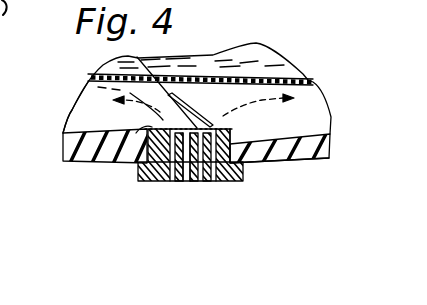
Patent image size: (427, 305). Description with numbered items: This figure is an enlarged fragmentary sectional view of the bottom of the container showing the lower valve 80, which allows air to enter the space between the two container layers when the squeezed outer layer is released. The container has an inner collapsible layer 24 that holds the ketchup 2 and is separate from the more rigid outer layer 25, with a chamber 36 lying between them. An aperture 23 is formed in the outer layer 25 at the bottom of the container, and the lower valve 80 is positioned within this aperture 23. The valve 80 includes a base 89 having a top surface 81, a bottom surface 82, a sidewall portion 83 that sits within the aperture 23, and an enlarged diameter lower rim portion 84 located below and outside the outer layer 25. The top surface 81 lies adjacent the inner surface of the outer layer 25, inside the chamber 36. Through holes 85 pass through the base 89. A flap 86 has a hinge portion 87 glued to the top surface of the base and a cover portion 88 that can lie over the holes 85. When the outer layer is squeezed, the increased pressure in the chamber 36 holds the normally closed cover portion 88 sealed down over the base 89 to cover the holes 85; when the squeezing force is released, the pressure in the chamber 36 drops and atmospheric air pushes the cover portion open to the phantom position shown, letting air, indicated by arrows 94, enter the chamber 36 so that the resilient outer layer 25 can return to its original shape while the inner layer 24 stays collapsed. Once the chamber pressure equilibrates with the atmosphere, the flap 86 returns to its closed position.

The ketchup 2 is at (256, 44).
The aperture 23 is at (160, 182).
The inner collapsible layer 24 is at (313, 82).
The outer layer 25 is at (307, 160).
The chamber 36 is at (72, 112).
The lower valve 80 is at (184, 199).
The top surface 81 is at (112, 163).
The bottom surface 82 is at (141, 181).
The sidewall portion 83 is at (257, 163).
The enlarged diameter lower rim portion 84 is at (244, 181).
The through holes 85 is at (205, 183).
The flap 86 is at (127, 56).
The hinge portion 87 is at (212, 118).
The cover portion 88 is at (172, 122).
The base 89 is at (223, 181).
The air arrows 94 is at (92, 85).